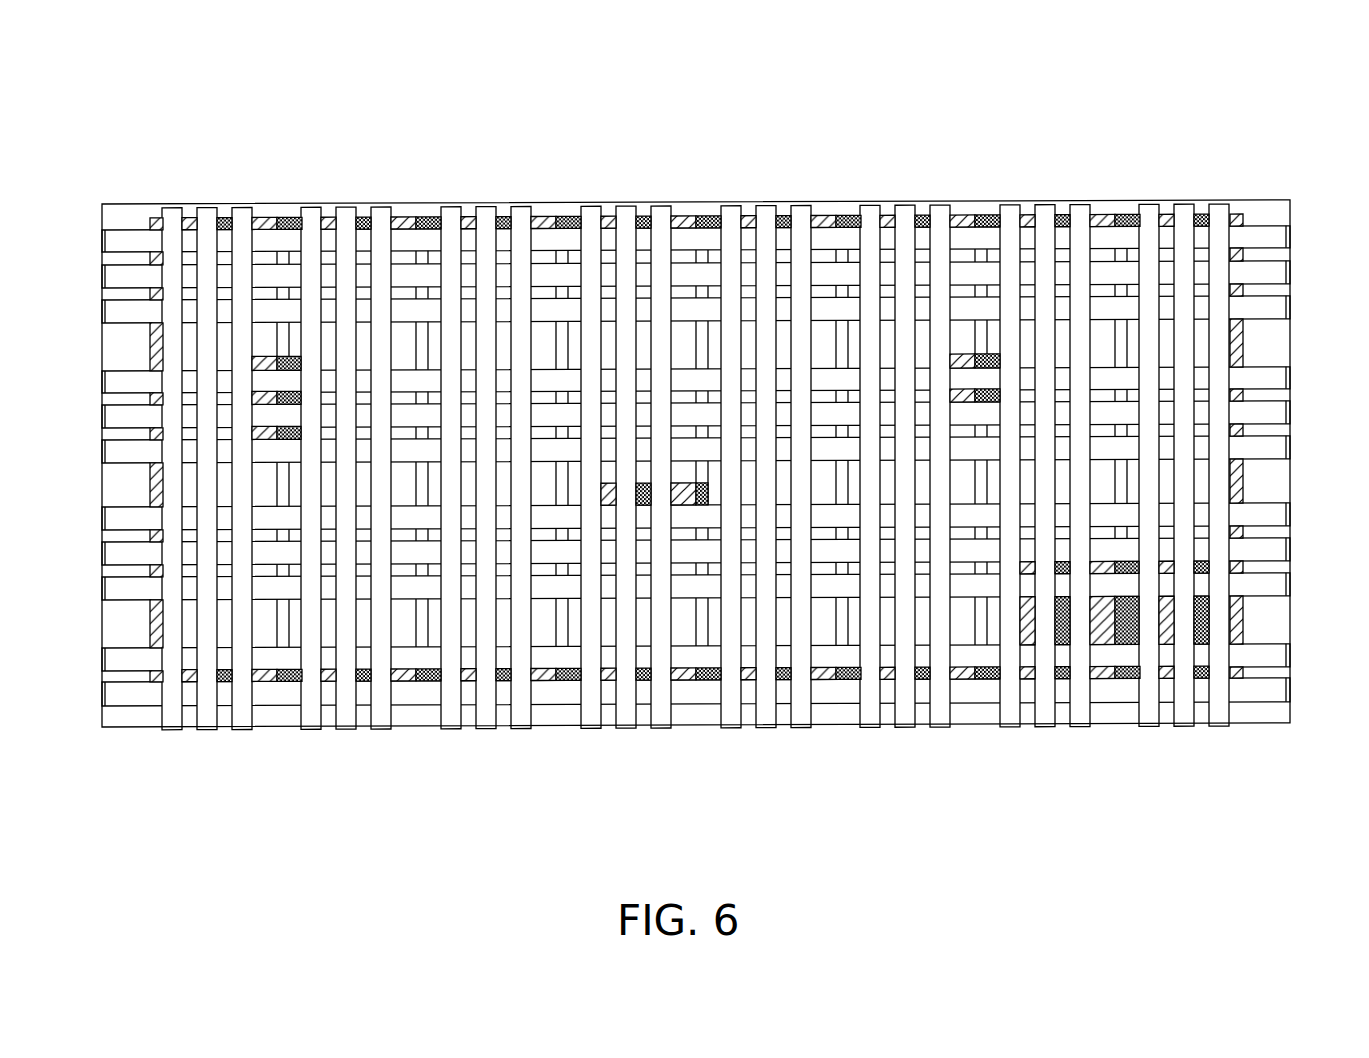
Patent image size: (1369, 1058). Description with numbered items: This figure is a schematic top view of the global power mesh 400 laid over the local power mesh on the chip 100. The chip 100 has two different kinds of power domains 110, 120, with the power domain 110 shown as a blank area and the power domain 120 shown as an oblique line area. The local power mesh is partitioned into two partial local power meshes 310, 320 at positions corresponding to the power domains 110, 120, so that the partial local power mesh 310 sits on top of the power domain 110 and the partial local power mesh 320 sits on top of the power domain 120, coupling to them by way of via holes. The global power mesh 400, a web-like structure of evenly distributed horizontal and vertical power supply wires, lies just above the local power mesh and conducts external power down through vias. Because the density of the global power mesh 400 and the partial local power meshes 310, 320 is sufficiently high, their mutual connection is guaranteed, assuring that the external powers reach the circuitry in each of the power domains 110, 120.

The chip 100 is at (728, 425).
The power domain 110 is at (824, 259).
The power domain 120 is at (1240, 337).
The partial local power mesh 310 is at (1124, 259).
The partial local power mesh 320 is at (281, 219).
The global power mesh 400 is at (593, 219).